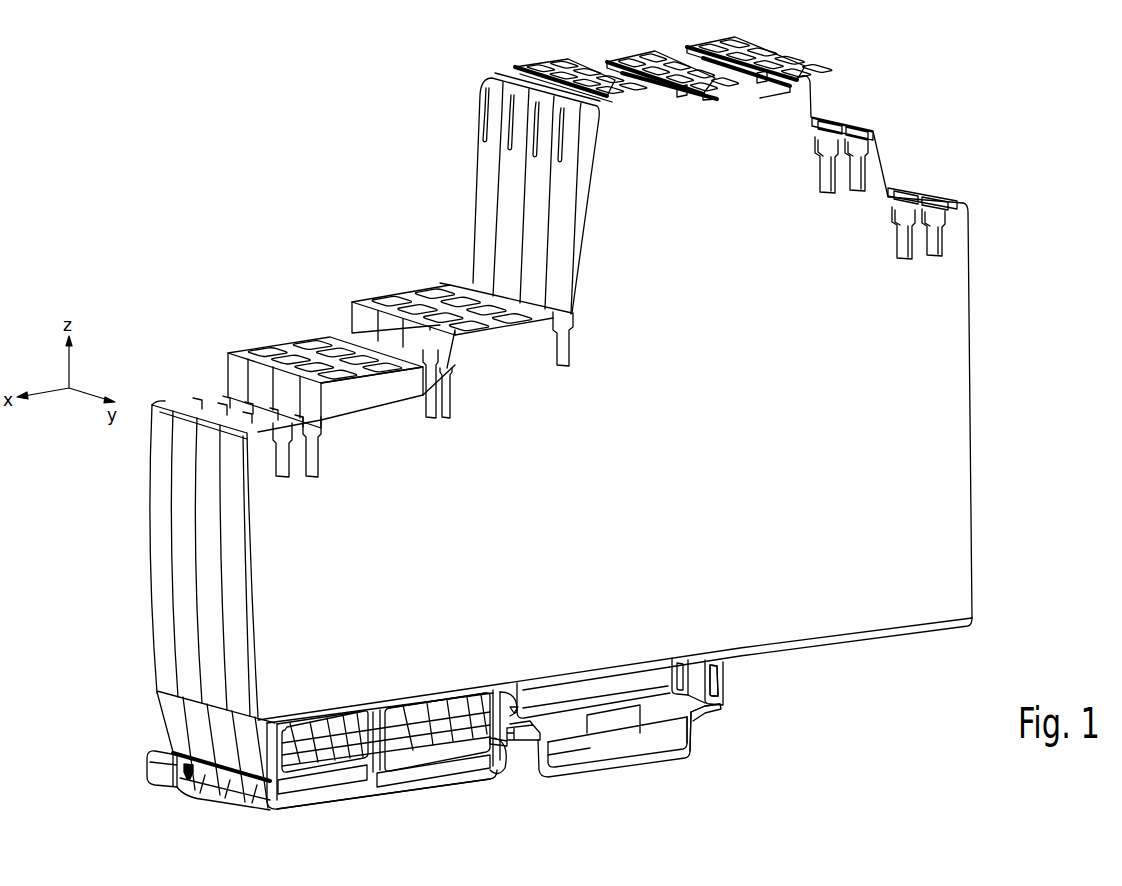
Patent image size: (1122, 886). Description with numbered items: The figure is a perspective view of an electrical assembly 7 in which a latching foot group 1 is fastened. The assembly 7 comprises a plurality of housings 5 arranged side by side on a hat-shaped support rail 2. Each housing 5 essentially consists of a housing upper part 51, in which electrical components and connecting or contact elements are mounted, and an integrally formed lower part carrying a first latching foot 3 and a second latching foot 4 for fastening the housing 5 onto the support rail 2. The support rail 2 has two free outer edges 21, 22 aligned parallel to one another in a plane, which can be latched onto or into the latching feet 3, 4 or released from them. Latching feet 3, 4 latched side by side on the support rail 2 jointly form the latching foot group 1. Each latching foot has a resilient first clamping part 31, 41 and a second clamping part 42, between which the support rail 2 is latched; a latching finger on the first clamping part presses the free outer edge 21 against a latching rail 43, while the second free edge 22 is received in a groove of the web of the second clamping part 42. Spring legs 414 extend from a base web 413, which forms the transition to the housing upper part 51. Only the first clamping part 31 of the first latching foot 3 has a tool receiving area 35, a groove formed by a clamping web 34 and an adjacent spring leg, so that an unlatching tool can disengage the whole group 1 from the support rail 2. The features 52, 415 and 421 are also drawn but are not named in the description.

The latching foot group 1 is at (441, 797).
The support rail 2 is at (624, 771).
The first latching foot 3 is at (177, 725).
The second latching foot 4 is at (257, 797).
The housing 5 is at (752, 76).
The assembly 7 is at (615, 398).
The free outer edge 21 is at (523, 735).
The free outer edge 22 is at (720, 707).
The first clamping part 31 is at (293, 733).
The clamping web 34 is at (147, 768).
The tool receiving area 35 is at (188, 780).
The first clamping part 41 is at (352, 800).
The second clamping part 42 is at (713, 728).
The latching rail 43 is at (572, 697).
The housing upper part 51 is at (230, 600).
The housing front wall 52 is at (618, 678).
The base web 413 is at (437, 697).
The spring leg 414 is at (257, 757).
The base cross web 415 is at (363, 735).
The guide slot 421 is at (722, 692).